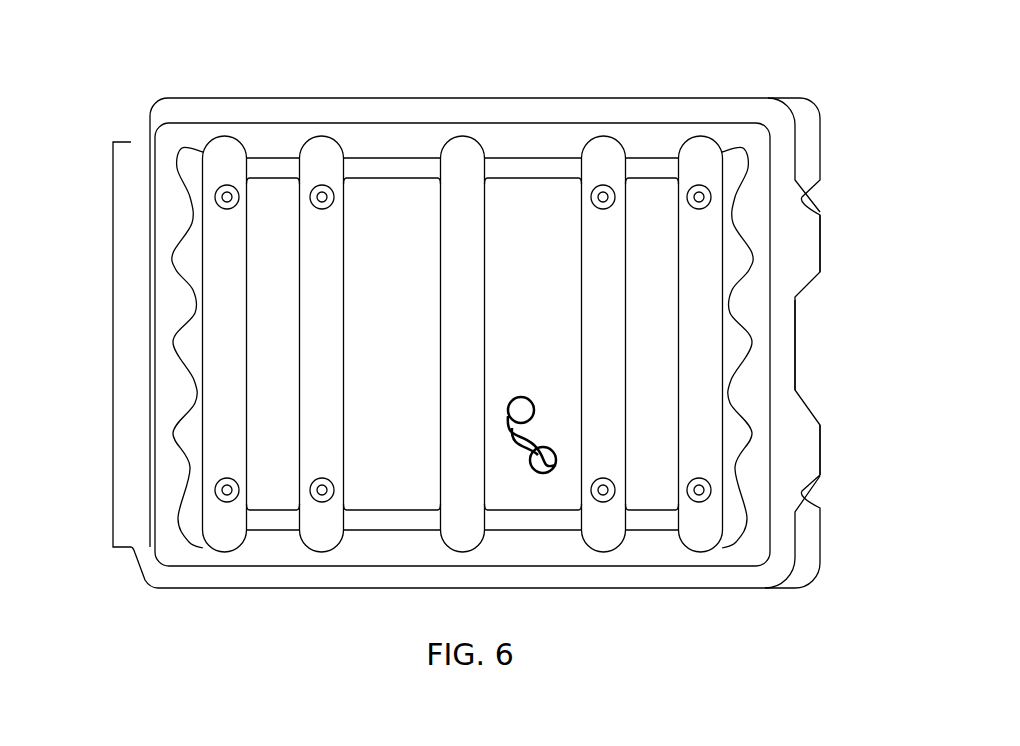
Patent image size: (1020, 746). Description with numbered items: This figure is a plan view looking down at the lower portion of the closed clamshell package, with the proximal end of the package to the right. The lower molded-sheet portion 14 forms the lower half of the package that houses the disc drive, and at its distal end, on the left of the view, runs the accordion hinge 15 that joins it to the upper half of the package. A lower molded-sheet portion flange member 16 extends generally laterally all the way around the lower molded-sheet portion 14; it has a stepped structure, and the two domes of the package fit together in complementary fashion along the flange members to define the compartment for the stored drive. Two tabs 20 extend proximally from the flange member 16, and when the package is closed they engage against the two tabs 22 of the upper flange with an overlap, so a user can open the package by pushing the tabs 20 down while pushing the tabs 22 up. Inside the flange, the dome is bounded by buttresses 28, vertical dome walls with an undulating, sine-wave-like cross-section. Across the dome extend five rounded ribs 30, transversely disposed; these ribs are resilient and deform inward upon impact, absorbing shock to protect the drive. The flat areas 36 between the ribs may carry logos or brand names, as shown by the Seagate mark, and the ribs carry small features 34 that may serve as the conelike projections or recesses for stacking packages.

The lower molded-sheet portion 14 is at (180, 73).
The accordion hinge 15 is at (122, 150).
The lower molded-sheet portion flange member 16 is at (655, 97).
The tabs 20 is at (778, 258).
The tabs 22 is at (822, 125).
The buttresses 28 is at (158, 312).
The rounded ribs 30 is at (207, 358).
The mounting hole 34 is at (228, 184).
The recess between ribs 36 is at (255, 358).